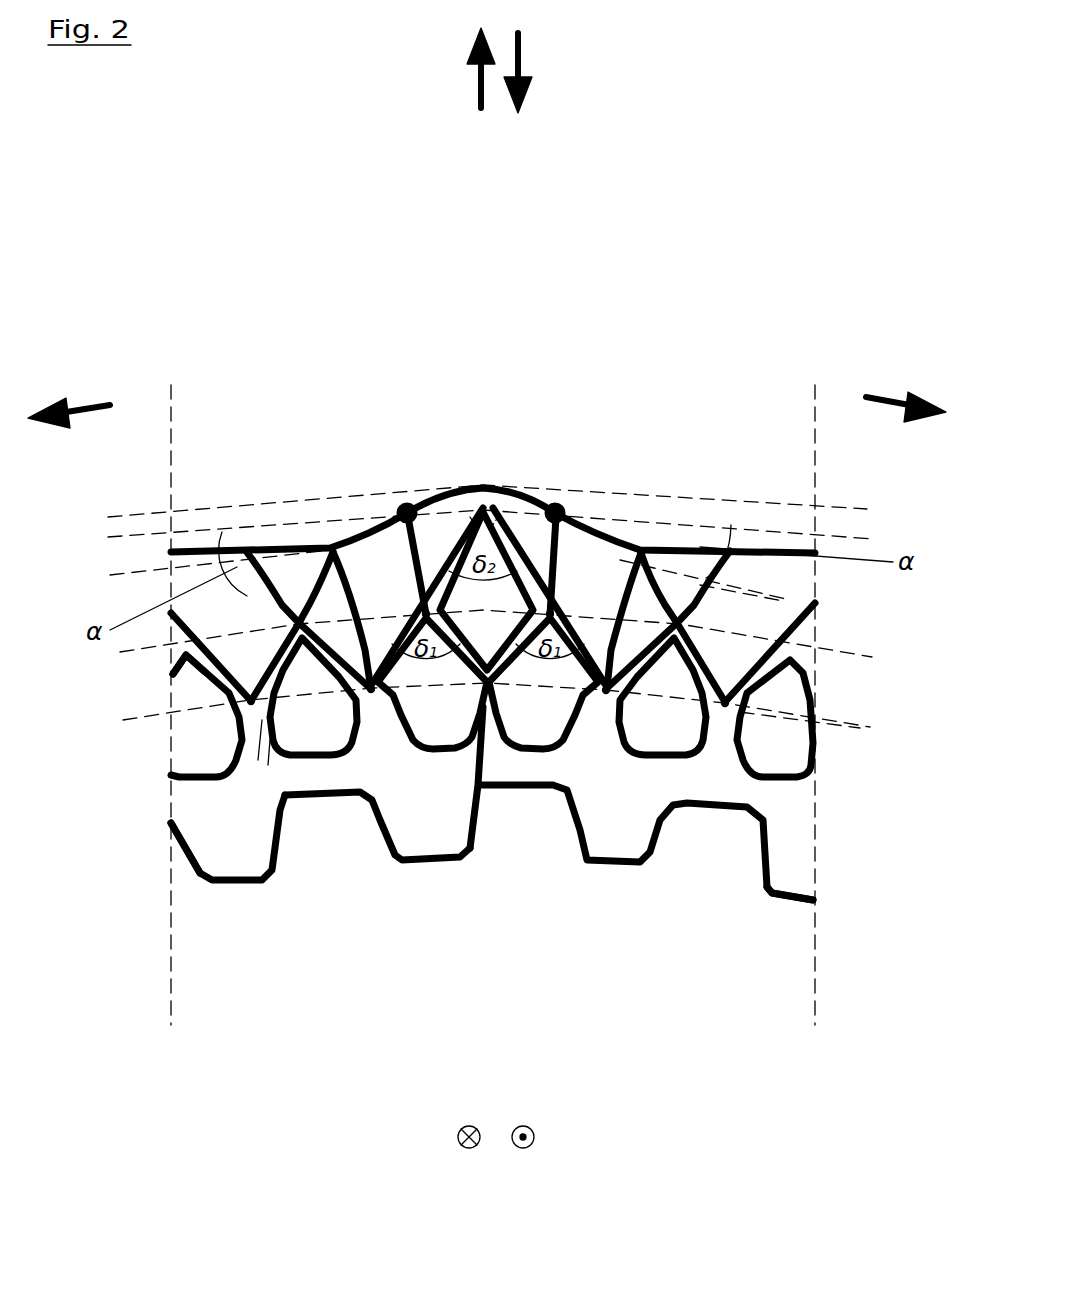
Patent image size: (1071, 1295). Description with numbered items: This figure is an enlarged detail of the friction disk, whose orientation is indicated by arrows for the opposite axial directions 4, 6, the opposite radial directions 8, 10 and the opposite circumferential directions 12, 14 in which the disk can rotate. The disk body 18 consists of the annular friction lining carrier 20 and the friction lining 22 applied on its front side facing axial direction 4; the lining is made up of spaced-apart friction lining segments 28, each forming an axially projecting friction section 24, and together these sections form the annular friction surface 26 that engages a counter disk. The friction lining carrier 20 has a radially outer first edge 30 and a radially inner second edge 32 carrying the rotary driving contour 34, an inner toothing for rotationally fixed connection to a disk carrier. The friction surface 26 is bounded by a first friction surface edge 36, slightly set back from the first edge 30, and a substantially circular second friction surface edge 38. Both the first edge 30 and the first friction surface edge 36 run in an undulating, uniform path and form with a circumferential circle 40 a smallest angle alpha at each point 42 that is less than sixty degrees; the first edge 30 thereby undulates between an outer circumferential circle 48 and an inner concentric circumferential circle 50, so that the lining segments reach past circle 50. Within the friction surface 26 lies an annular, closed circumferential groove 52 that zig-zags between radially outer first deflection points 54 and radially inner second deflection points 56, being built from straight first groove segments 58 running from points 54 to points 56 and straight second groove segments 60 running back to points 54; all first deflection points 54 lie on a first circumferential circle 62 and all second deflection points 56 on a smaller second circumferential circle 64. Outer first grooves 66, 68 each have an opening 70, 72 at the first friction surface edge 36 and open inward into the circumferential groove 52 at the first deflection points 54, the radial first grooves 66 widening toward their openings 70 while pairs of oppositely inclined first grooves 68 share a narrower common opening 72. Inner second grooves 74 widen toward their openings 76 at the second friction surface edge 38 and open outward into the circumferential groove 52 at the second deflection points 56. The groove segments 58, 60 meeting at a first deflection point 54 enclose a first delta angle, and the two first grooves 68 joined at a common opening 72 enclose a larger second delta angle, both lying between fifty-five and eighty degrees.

The axial direction 4 is at (534, 1146).
The axial direction 6 is at (458, 1146).
The radial direction 8 is at (478, 82).
The radial direction 10 is at (523, 56).
The circumferential direction 12 is at (82, 405).
The circumferential direction 14 is at (897, 398).
The disk body 18 is at (196, 876).
The friction lining carrier 20 is at (185, 848).
The friction lining 22 is at (172, 770).
The friction section 24 is at (783, 601).
The friction surface 26 is at (548, 720).
The friction lining segment 28 is at (780, 656).
The first edge 30 is at (334, 548).
The second edge 32 is at (700, 762).
The rotary driving contour 34 is at (810, 900).
The first friction surface edge 36 is at (698, 548).
The second friction surface edge 38 is at (775, 790).
The circumferential circle 40 is at (730, 538).
The point 42 is at (406, 510).
The circumferential circle 48 is at (108, 516).
The circumferential circle 50 is at (118, 576).
The circumferential groove 52 is at (770, 683).
The first deflection point 54 is at (299, 619).
The second deflection point 56 is at (250, 703).
The first groove segment 58 is at (195, 672).
The second groove segment 60 is at (290, 745).
The first circumferential circle 62 is at (137, 649).
The second circumferential circle 64 is at (150, 713).
The first groove 66 is at (287, 575).
The first groove 68 is at (462, 520).
The opening 70 is at (304, 592).
The common opening 72 is at (484, 492).
The second groove 74 is at (258, 738).
The opening 76 is at (267, 757).